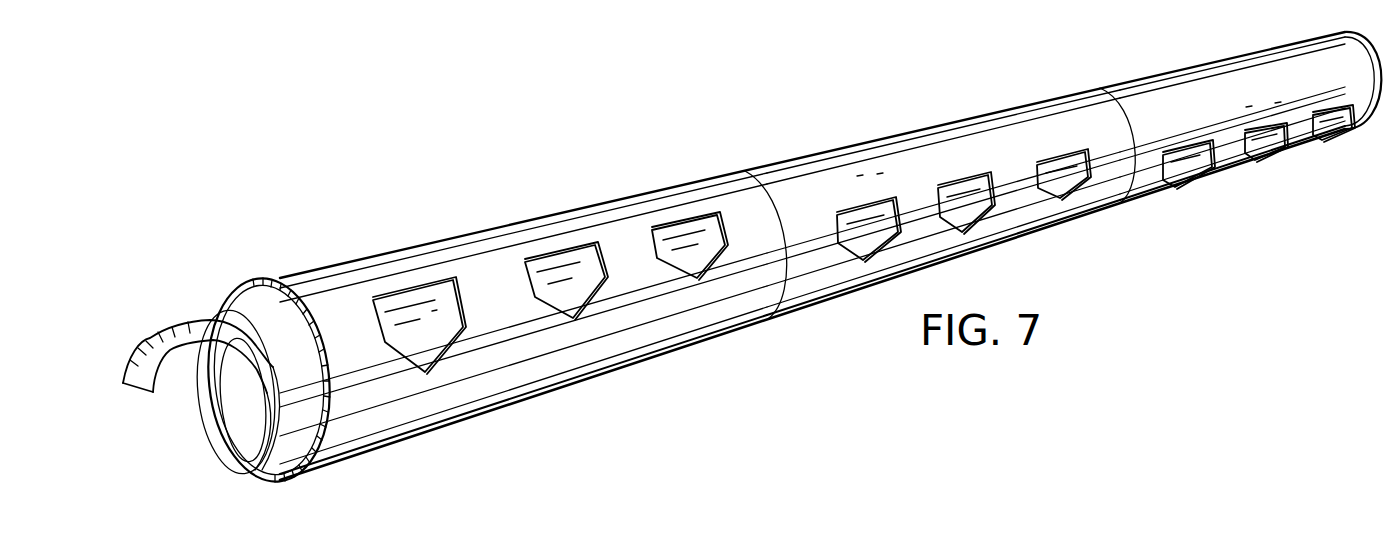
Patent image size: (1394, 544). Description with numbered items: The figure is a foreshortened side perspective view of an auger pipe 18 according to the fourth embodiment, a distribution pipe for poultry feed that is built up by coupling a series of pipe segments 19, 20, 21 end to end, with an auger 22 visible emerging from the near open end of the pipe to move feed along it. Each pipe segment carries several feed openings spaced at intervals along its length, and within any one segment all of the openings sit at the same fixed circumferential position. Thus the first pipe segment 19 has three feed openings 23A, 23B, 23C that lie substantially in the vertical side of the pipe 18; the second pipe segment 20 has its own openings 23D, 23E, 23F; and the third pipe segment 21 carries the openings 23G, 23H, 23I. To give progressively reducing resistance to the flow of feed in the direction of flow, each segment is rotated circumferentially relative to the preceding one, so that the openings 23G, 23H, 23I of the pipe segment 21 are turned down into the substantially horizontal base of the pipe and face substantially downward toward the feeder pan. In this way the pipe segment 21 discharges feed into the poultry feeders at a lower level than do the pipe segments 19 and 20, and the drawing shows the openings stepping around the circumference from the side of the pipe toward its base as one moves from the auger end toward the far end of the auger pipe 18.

The auger pipe 18 is at (352, 245).
The pipe segment 19 is at (497, 267).
The pipe segment 20 is at (915, 160).
The pipe segment 21 is at (1205, 88).
The auger 22 is at (167, 343).
The feed opening 23A is at (427, 330).
The feed opening 23B is at (570, 288).
The feed opening 23C is at (695, 252).
The feed opening 23D is at (858, 237).
The feed opening 23E is at (972, 202).
The feed opening 23F is at (1065, 177).
The feed opening 23G is at (1188, 172).
The feed opening 23H is at (1265, 143).
The feed opening 23I is at (1330, 123).